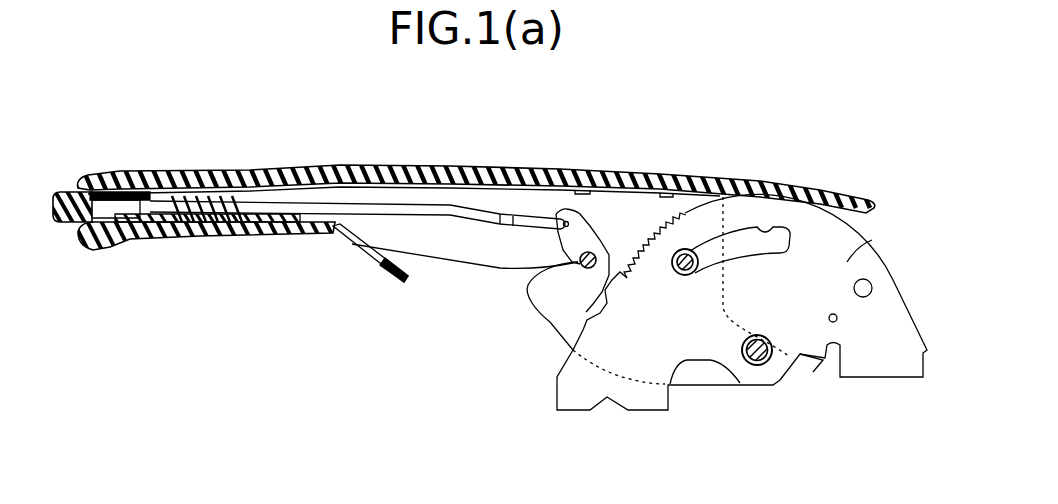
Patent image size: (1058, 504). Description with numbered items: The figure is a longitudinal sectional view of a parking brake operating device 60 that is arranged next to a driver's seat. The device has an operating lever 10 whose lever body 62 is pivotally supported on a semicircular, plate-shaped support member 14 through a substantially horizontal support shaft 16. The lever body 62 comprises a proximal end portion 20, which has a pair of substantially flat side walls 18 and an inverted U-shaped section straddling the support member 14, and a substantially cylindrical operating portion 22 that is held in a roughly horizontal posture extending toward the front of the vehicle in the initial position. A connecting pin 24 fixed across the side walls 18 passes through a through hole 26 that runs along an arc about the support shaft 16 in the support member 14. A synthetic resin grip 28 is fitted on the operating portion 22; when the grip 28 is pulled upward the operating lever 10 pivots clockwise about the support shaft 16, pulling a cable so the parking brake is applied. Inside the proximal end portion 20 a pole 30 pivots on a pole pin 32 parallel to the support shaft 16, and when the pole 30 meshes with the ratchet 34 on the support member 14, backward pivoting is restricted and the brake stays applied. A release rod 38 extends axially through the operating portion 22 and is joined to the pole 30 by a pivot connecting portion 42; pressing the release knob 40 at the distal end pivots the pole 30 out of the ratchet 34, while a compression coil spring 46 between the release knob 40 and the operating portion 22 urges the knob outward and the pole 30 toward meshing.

The operating lever 10 is at (650, 120).
The support member 14 is at (868, 238).
The support shaft 16 is at (766, 368).
The side walls 18 is at (703, 376).
The proximal end portion 20 is at (541, 342).
The operating portion 22 is at (253, 188).
The connecting pin 24 is at (684, 249).
The through hole 26 is at (775, 227).
The grip 28 is at (345, 178).
The pole 30 is at (580, 240).
The pole pin 32 is at (530, 283).
The ratchet 34 is at (641, 230).
The release rod 38 is at (318, 208).
The release knob 40 is at (105, 188).
The pivot connecting portion 42 is at (525, 219).
The compression coil spring 46 is at (207, 227).
The parking brake operating device 60 is at (341, 358).
The lever body 62 is at (471, 280).